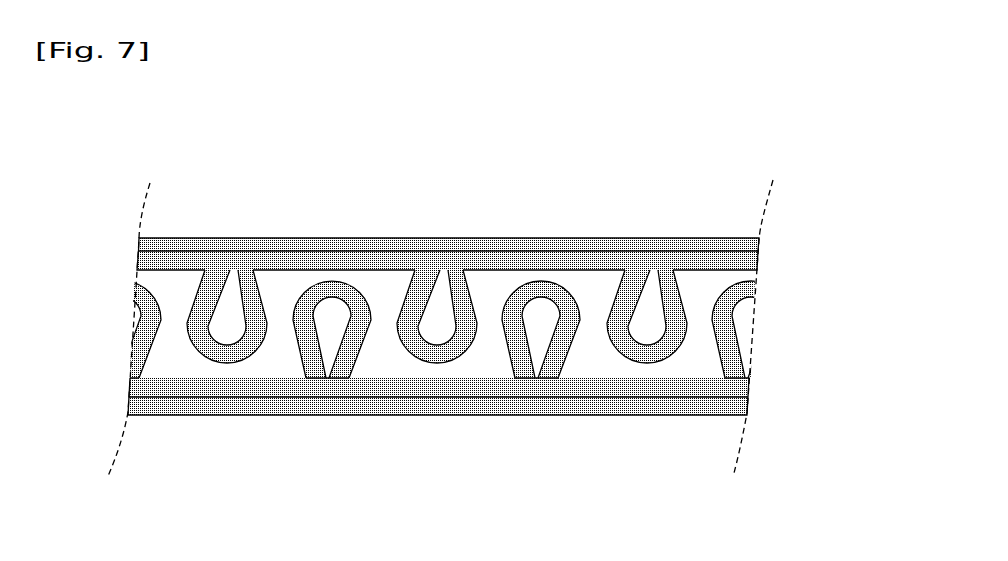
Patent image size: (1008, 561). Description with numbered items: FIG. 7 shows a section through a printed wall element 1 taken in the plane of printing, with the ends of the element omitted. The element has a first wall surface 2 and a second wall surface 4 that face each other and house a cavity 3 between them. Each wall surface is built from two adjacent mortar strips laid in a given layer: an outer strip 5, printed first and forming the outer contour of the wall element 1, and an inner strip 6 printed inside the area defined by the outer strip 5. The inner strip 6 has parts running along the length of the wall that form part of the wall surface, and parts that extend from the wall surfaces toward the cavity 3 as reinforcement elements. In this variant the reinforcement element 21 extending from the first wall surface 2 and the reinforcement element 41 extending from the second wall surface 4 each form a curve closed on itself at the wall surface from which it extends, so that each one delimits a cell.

The laminated sheet 1 is at (468, 195).
The first wall surface 2 is at (673, 258).
The protrusion of first sheet 21 is at (210, 283).
The cavity 3 is at (436, 310).
The second wall surface 4 is at (657, 388).
The protrusion of second sheet 41 is at (300, 340).
The outer strip 5 is at (758, 248).
The inner strip 6 is at (758, 262).